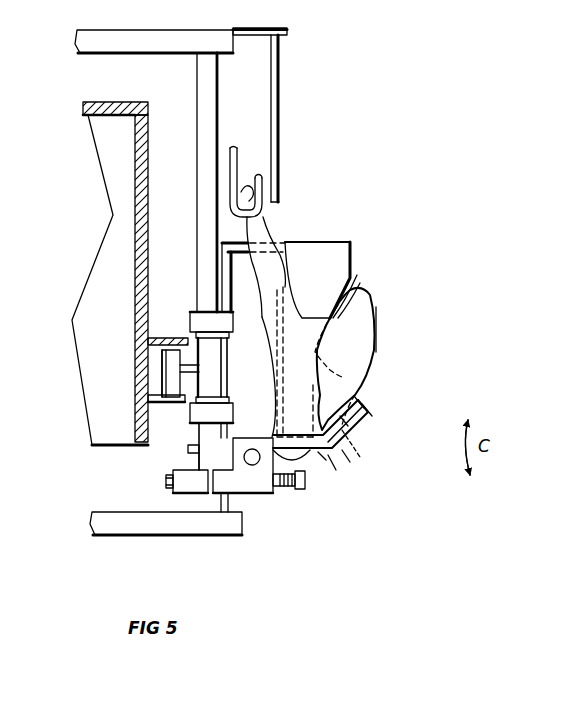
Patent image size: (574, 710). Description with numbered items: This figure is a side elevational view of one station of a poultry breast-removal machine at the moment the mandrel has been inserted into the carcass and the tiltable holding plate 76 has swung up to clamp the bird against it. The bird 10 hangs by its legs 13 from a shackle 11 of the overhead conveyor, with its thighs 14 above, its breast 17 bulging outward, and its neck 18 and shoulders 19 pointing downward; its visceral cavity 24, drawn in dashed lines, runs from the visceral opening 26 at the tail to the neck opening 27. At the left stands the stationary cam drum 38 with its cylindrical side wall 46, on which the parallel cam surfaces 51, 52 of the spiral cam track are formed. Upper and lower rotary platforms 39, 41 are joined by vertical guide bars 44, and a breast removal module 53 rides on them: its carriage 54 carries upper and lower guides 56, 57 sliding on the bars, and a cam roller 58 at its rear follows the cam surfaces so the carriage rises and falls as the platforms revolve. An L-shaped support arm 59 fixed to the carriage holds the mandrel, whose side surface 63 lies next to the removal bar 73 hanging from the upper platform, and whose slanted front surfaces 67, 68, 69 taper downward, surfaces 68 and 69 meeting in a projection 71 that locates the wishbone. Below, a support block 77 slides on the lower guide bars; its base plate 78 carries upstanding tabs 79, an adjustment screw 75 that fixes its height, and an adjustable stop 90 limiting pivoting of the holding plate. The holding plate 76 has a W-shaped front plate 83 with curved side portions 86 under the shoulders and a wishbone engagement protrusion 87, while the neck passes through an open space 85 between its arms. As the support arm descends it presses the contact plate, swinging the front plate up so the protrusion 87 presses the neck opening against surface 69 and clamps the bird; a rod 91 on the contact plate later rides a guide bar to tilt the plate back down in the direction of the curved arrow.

The bird 10 is at (403, 300).
The shackle 11 is at (235, 150).
The legs 13 is at (268, 221).
The thighs 14 is at (300, 244).
The breast 17 is at (373, 322).
The neck 18 is at (309, 456).
The shoulders 19 is at (347, 460).
The visceral cavity 24 is at (266, 357).
The visceral opening 26 is at (355, 275).
The neck opening 27 is at (324, 458).
The cam drum 38 is at (93, 140).
The upper rotary platform 39 is at (176, 14).
The lower rotary platform 41 is at (135, 527).
The vertical guide bars 44 is at (216, 82).
The cylindrical side wall 46 is at (155, 112).
The cam surface 51 is at (160, 336).
The cam surface 52 is at (165, 404).
The breast removal module 53 is at (177, 332).
The carriage 54 is at (192, 358).
The upper guides 56 is at (187, 327).
The lower guides 57 is at (188, 447).
The cam roller 58 is at (150, 392).
The L-shaped support arm 59 is at (222, 250).
The side surface 63 is at (336, 240).
The slanted front surface 67 is at (340, 284).
The slanted front surface 68 is at (340, 340).
The slanted front surface 69 is at (360, 457).
The projection 71 is at (375, 350).
The removal bar 73 is at (283, 64).
The adjustment screw 75 is at (165, 481).
The tiltable holding plate 76 is at (372, 440).
The support block 77 is at (234, 500).
The base plate 78 is at (178, 492).
The tab 79 is at (238, 440).
The front plate 83 is at (374, 421).
The open space 85 is at (333, 465).
The curved side portions 86 is at (362, 406).
The wishbone engagement protrusion 87 is at (355, 399).
The adjustable stop 90 is at (288, 492).
The rod 91 is at (197, 454).